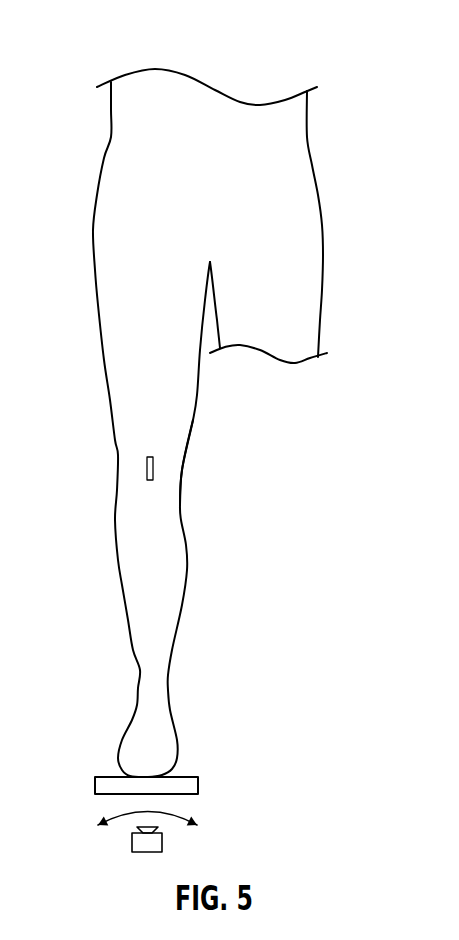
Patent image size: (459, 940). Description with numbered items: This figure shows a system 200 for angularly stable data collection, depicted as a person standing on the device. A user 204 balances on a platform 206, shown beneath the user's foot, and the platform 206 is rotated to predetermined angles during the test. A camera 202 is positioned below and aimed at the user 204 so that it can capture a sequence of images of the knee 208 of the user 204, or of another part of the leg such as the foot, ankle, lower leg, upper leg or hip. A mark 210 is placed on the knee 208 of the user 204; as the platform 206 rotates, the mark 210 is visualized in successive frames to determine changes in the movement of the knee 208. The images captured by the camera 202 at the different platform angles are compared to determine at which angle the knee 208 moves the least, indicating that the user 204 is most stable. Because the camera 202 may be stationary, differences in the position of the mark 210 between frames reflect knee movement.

The system 200 is at (316, 46).
The camera 202 is at (132, 840).
The user 204 is at (123, 112).
The platform 206 is at (198, 785).
The knee 208 is at (183, 473).
The mark 210 is at (143, 468).